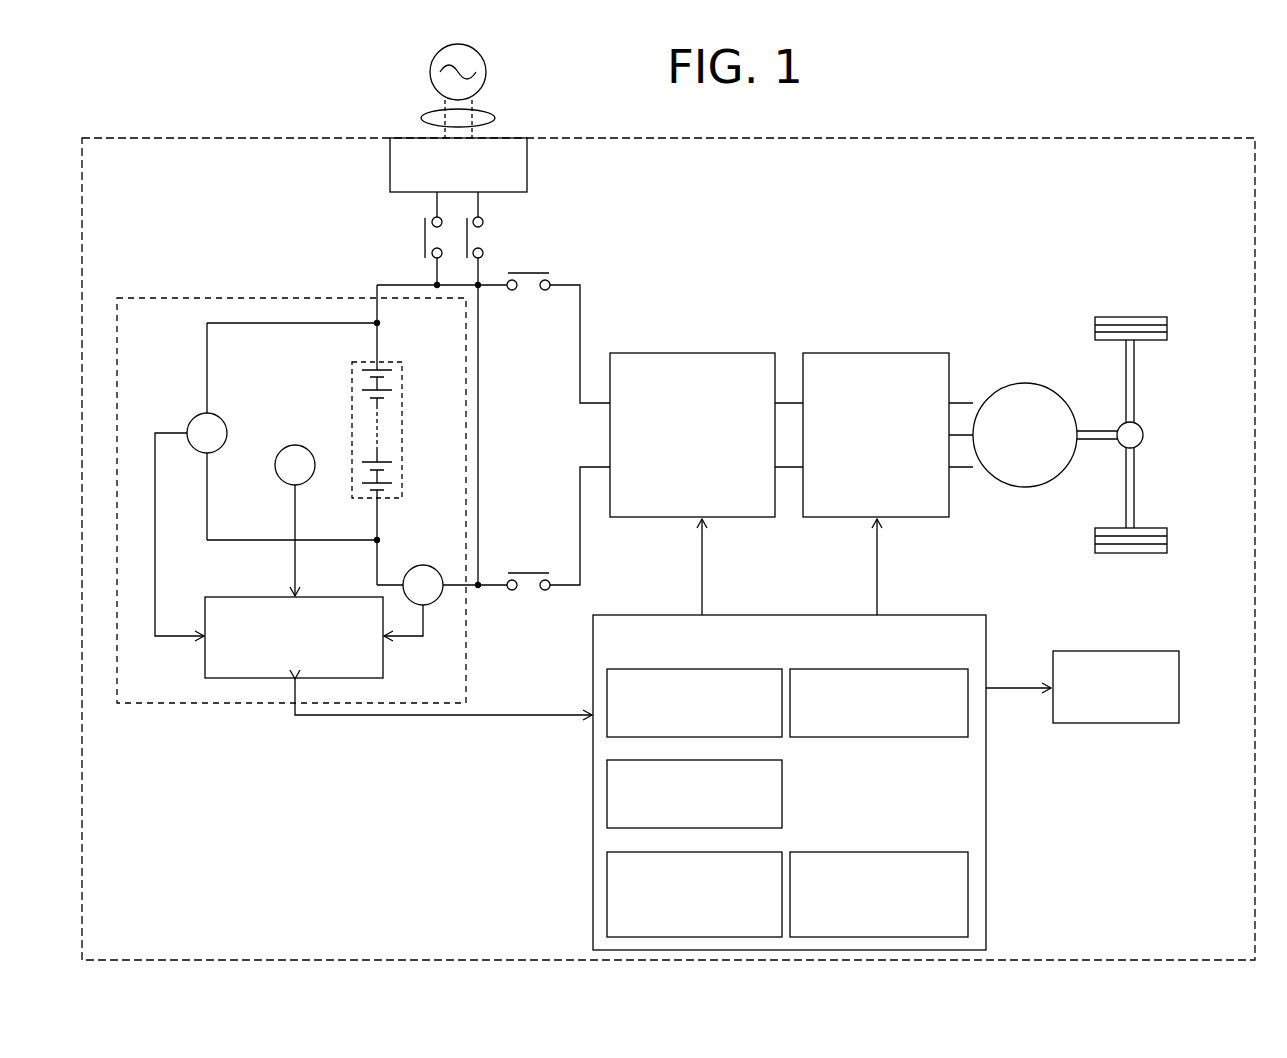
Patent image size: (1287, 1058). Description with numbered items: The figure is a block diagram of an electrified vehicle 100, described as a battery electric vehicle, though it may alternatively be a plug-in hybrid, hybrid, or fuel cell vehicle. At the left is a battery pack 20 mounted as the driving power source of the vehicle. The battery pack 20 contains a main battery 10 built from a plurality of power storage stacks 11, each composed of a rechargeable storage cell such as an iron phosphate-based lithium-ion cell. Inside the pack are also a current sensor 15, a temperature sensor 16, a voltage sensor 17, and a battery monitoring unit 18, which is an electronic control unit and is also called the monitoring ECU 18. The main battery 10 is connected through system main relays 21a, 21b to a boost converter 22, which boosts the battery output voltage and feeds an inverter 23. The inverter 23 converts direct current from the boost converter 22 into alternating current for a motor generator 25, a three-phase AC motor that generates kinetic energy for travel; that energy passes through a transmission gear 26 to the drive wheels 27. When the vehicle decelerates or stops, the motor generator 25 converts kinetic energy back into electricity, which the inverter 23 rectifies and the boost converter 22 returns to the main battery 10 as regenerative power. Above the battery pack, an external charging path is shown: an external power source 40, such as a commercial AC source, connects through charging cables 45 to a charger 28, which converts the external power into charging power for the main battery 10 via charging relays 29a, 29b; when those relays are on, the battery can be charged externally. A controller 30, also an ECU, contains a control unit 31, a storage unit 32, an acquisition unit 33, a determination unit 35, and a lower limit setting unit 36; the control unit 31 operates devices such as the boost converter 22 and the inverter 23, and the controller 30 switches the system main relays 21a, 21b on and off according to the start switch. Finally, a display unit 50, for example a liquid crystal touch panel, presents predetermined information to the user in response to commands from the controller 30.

The electrified vehicle 100 is at (1160, 138).
The external power source 40 is at (488, 73).
The charging cables 45 is at (496, 118).
The charger 28 is at (528, 166).
The charging relay 29a is at (418, 240).
The charging relay 29b is at (486, 240).
The battery pack 20 is at (183, 297).
The main battery 10 is at (402, 430).
The power storage stack 11 is at (392, 384).
The current sensor 15 is at (420, 563).
The temperature sensor 16 is at (295, 445).
The voltage sensor 17 is at (195, 418).
The battery monitoring unit 18 is at (240, 597).
The system main relay 21a is at (529, 293).
The system main relay 21b is at (529, 593).
The boost converter 22 is at (700, 351).
The inverter 23 is at (877, 351).
The motor generator 25 is at (1026, 383).
The transmission gear 26 is at (1143, 435).
The drive wheels 27 is at (1130, 317).
The controller 30 is at (957, 615).
The control unit 31 is at (607, 690).
The storage unit 32 is at (970, 716).
The acquisition unit 33 is at (607, 780).
The determination unit 35 is at (607, 872).
The lower limit setting unit 36 is at (970, 900).
The display unit 50 is at (1180, 688).